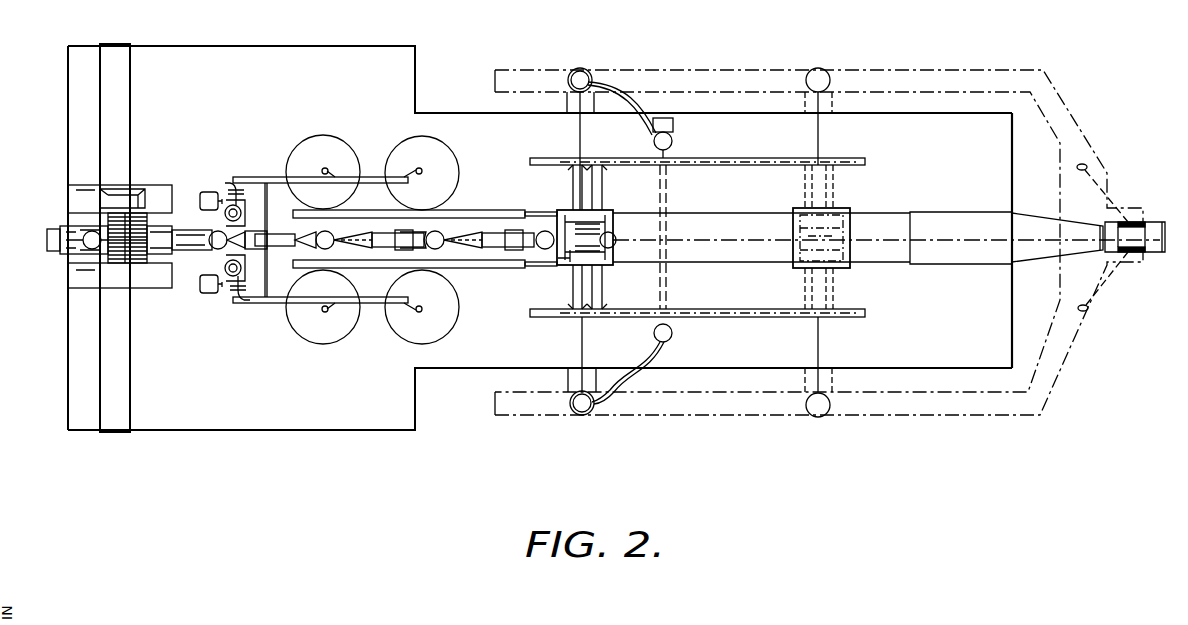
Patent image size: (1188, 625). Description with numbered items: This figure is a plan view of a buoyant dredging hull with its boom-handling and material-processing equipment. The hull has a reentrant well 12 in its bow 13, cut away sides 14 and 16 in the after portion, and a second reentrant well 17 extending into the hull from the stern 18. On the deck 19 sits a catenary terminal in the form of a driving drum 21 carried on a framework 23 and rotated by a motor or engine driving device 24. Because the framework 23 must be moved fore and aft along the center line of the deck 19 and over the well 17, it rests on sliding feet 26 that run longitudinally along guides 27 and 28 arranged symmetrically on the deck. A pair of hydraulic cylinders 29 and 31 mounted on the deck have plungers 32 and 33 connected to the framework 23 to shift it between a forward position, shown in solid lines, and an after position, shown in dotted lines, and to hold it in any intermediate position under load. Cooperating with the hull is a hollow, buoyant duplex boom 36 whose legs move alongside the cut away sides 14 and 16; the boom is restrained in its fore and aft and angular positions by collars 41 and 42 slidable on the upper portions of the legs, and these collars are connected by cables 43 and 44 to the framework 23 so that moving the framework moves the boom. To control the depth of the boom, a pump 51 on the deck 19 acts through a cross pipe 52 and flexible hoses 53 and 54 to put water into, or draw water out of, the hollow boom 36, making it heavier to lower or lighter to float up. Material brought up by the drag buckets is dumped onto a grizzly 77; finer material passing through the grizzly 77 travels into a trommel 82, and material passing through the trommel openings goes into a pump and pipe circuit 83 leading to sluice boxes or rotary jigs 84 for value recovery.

The reentrant well 12 is at (72, 262).
The bow 13 is at (68, 138).
The cut away side 14 is at (420, 112).
The cut away side 16 is at (425, 373).
The reentrant well 17 is at (850, 215).
The stern 18 is at (1012, 174).
The deck 19 is at (952, 350).
The driving drum 21 is at (612, 263).
The framework 23 is at (612, 212).
The motor or engine driving device 24 is at (572, 258).
The sliding feet 26 is at (603, 170).
The guide 27 is at (728, 166).
The guide 28 is at (680, 309).
The hydraulic cylinder 29 is at (344, 211).
The hydraulic cylinder 31 is at (345, 268).
The plunger 32 is at (535, 212).
The plunger 33 is at (530, 268).
The duplex boom 36 is at (686, 68).
The collar 41 is at (584, 416).
The collar 42 is at (586, 68).
The cable 43 is at (582, 130).
The cable 44 is at (584, 330).
The pump 51 is at (674, 124).
The cross pipe 52 is at (667, 203).
The flexible hose 53 is at (622, 368).
The flexible hose 54 is at (622, 96).
The grizzly 77 is at (148, 188).
The trommel 82 is at (192, 263).
The pump and pipe circuit 83 is at (244, 294).
The rotary jig 84 is at (337, 333).